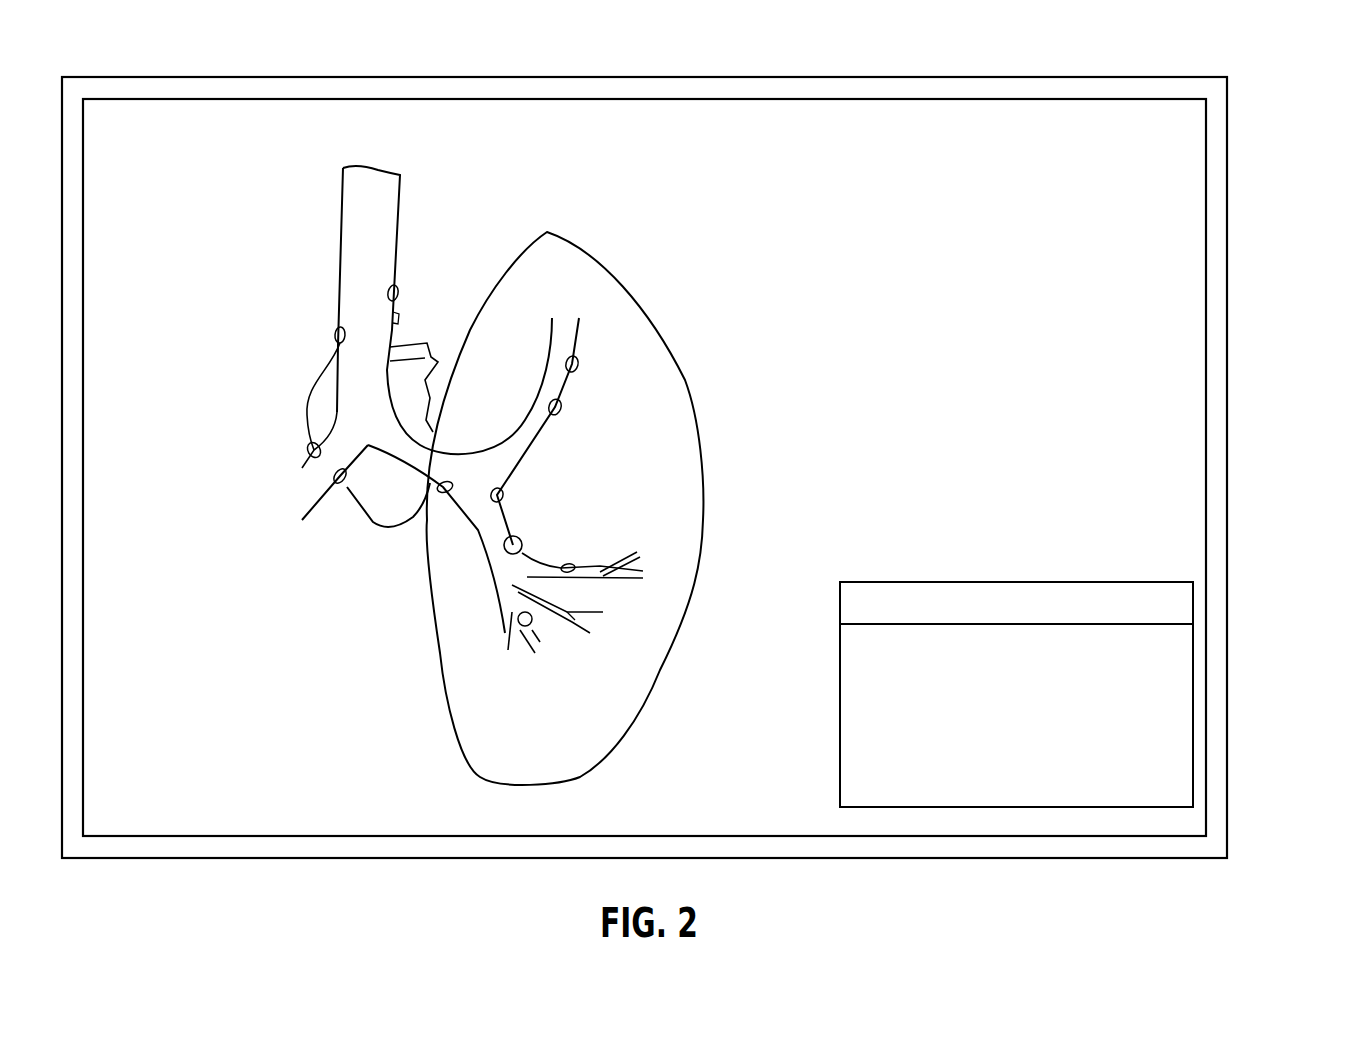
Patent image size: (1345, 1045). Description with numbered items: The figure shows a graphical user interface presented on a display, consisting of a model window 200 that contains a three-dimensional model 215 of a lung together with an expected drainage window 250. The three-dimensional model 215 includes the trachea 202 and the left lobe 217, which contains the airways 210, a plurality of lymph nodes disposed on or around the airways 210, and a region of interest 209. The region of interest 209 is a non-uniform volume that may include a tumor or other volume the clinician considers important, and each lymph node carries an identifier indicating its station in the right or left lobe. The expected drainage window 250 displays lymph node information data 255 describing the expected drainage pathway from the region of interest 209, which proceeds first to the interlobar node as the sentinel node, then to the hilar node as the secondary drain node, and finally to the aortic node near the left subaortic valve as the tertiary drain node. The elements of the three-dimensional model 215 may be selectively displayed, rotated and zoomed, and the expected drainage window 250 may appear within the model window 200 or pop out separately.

The model window 200 is at (1244, 66).
The trachea 202 is at (343, 221).
The region of interest 209 is at (522, 545).
The airways 210 is at (575, 495).
The 3D model 215 is at (440, 400).
The left lobe 217 is at (593, 252).
The expected drainage window 250 is at (1016, 732).
The lymph node information data 255 is at (938, 807).